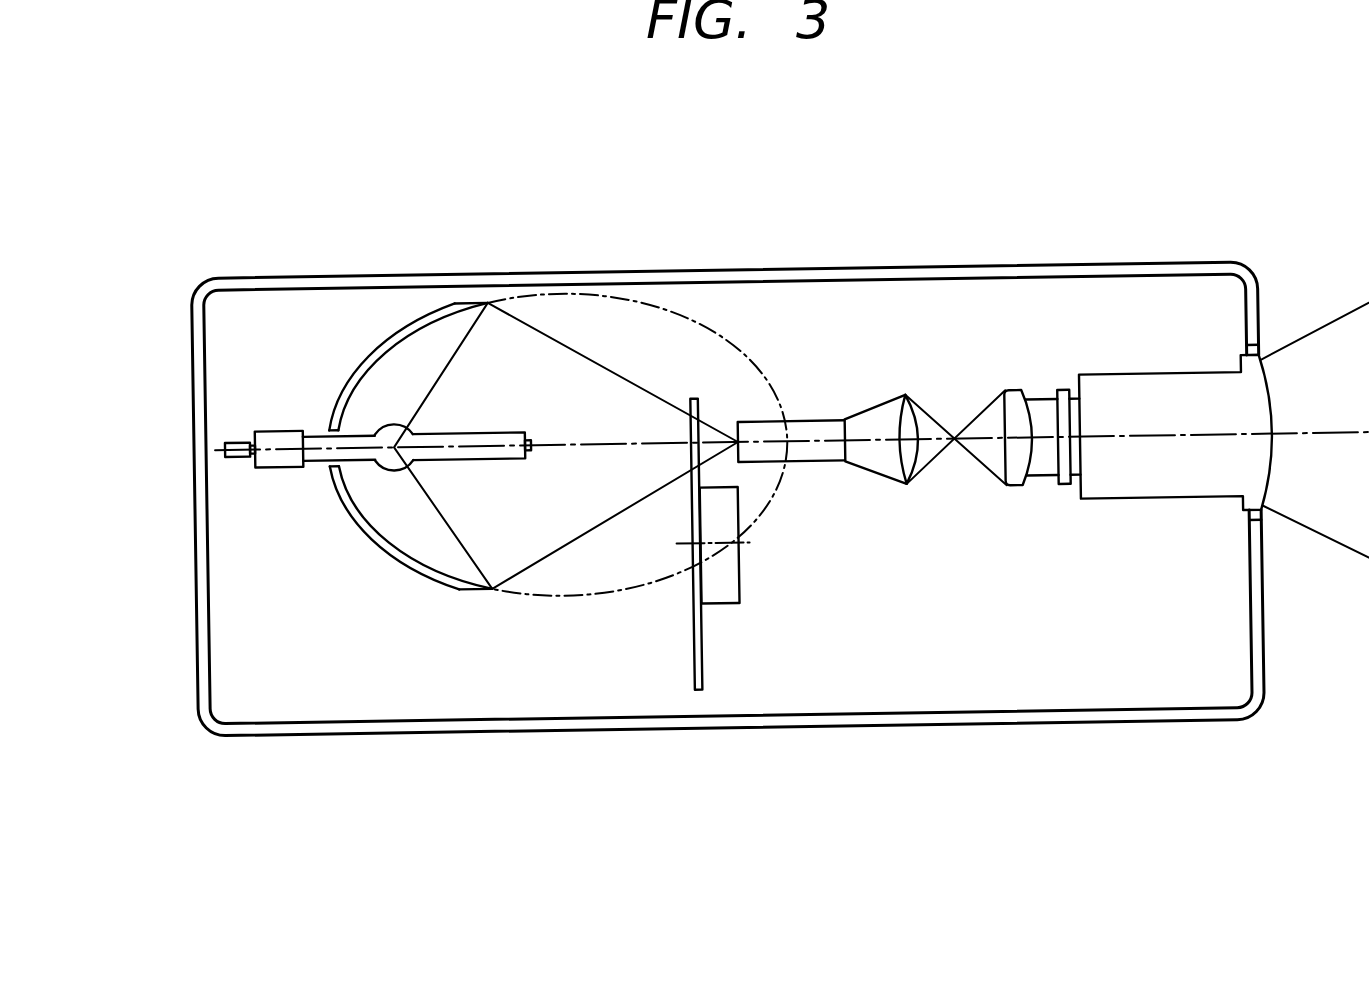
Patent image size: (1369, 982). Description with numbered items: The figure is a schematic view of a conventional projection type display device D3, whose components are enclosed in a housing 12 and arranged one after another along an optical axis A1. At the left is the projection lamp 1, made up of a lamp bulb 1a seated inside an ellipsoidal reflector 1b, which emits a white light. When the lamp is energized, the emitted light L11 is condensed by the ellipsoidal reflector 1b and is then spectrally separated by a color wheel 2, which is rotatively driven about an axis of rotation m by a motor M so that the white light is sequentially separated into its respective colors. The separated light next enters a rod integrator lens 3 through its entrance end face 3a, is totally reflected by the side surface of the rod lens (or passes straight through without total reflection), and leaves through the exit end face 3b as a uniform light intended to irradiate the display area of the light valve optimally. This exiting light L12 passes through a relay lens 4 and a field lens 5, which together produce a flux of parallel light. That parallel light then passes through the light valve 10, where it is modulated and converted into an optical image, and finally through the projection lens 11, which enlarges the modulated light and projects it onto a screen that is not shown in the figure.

The projection type display device D3 is at (179, 188).
The projection lamp 1 is at (284, 210).
The lamp bulb 1a is at (393, 417).
The ellipsoidal reflector 1b is at (347, 370).
The optical axis A1 is at (550, 437).
The exiting light L11 is at (612, 383).
The color wheel 2 is at (694, 646).
The motor M is at (720, 610).
The axis of rotation m is at (675, 546).
The rod integrator lens 3 is at (898, 571).
The entrance end face 3a is at (743, 465).
The exit end face 3b is at (845, 469).
The exiting light L12 is at (860, 422).
The relay lens 4 is at (905, 397).
The field lens 5 is at (1011, 394).
The light valve 10 is at (1063, 393).
The projection lens 11 is at (1141, 379).
The housing 12 is at (1245, 271).